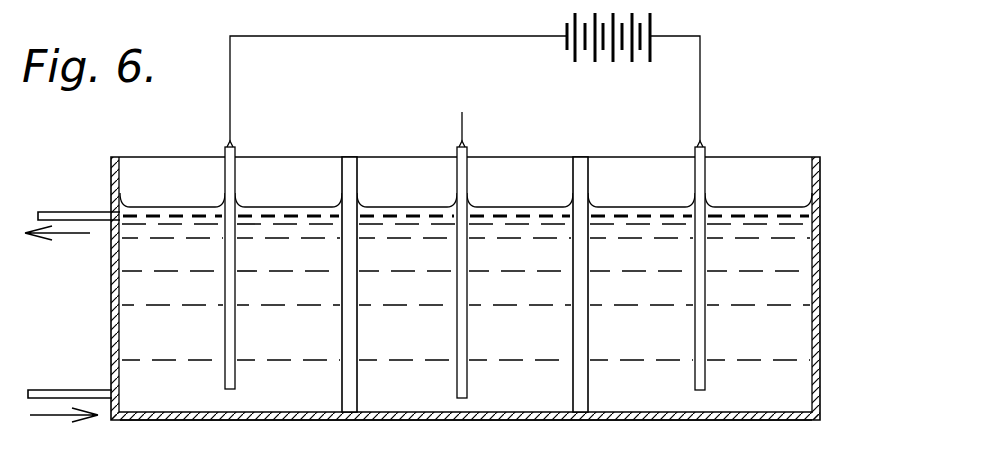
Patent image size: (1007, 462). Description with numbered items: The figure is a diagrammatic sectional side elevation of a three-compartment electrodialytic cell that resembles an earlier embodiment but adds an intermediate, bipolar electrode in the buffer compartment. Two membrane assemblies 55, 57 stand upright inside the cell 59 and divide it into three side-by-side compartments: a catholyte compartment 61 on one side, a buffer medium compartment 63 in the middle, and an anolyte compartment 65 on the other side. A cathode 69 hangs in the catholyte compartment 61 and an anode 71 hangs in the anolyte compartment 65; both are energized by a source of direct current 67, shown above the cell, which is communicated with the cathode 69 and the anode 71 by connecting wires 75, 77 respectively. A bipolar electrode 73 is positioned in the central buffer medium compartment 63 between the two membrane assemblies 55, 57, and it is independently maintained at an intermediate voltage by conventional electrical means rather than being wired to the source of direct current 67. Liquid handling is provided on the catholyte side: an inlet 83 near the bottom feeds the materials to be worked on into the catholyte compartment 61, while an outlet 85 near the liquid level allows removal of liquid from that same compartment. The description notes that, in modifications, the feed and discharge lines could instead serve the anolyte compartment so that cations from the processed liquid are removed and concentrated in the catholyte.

The membrane assembly 55 is at (342, 332).
The membrane assembly 57 is at (588, 330).
The cell 59 is at (855, 189).
The catholyte compartment 61 is at (143, 316).
The buffer medium compartment 63 is at (424, 395).
The anolyte compartment 65 is at (800, 325).
The source of direct current 67 is at (595, 70).
The cathode 69 is at (225, 287).
The anode 71 is at (705, 290).
The bipolar electrode 73 is at (468, 332).
The connecting wire 75 is at (340, 40).
The connecting wire 77 is at (700, 65).
The inlet 83 is at (75, 368).
The outlet 85 is at (88, 190).